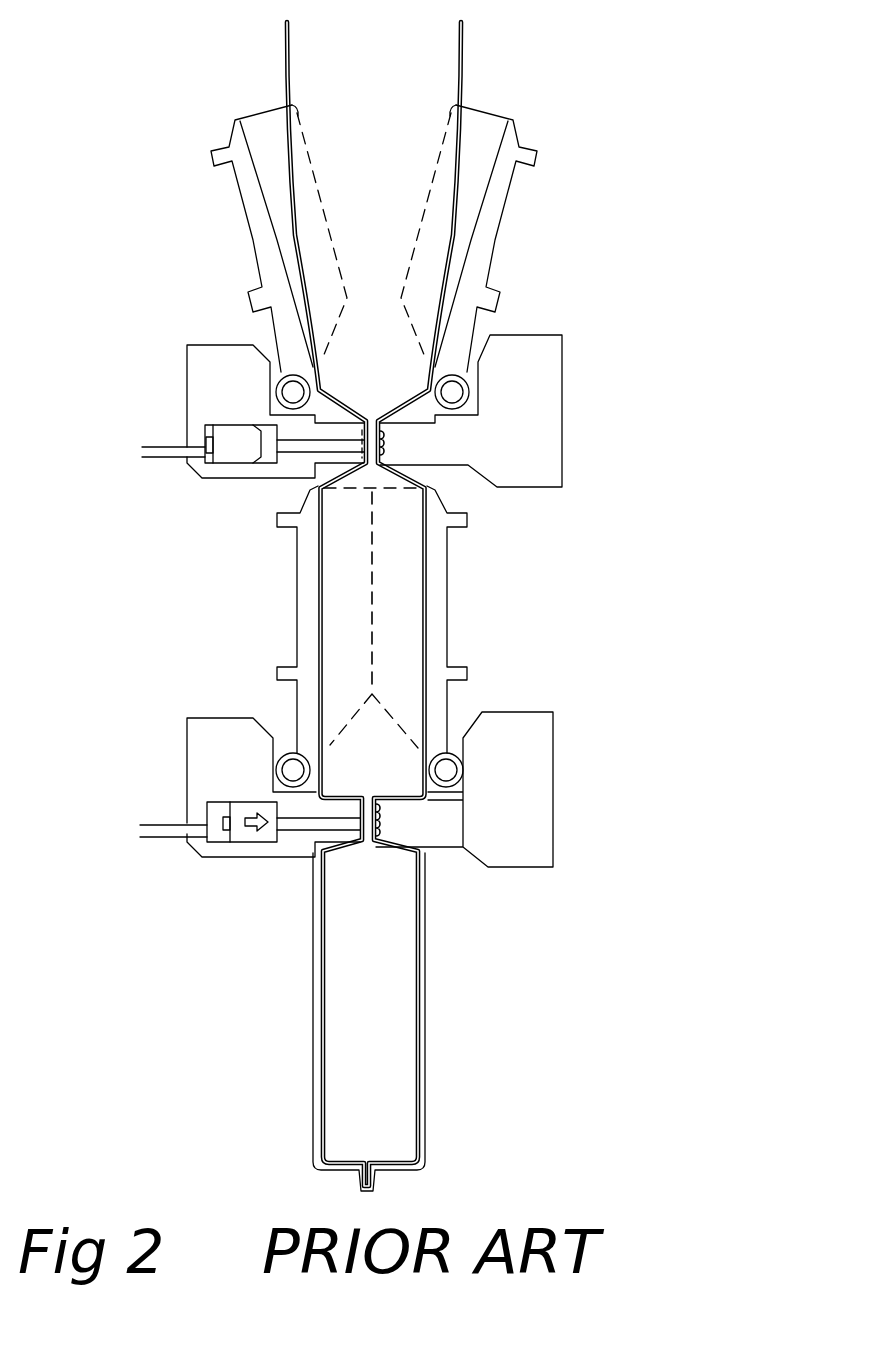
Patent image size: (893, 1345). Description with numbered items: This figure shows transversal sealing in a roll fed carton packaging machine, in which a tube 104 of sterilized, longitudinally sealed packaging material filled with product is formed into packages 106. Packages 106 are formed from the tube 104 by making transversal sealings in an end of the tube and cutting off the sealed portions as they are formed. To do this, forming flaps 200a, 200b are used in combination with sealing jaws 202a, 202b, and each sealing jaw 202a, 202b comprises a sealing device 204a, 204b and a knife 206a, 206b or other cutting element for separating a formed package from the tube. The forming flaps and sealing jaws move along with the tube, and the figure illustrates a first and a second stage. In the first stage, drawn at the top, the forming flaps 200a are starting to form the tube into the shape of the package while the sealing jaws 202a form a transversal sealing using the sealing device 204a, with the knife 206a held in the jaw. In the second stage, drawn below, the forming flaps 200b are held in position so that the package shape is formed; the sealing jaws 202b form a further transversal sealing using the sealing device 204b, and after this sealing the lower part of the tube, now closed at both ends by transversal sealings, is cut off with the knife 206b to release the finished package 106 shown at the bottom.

The tube 104 is at (412, 75).
The forming flaps 200a is at (252, 202).
The sealing jaws 202a is at (207, 363).
The sealing device 204a is at (388, 446).
The knife 206a is at (297, 448).
The forming flaps 200b is at (307, 592).
The sealing jaws 202b is at (207, 745).
The sealing device 204b is at (380, 828).
The knife 206b is at (312, 818).
The package 106 is at (387, 1025).